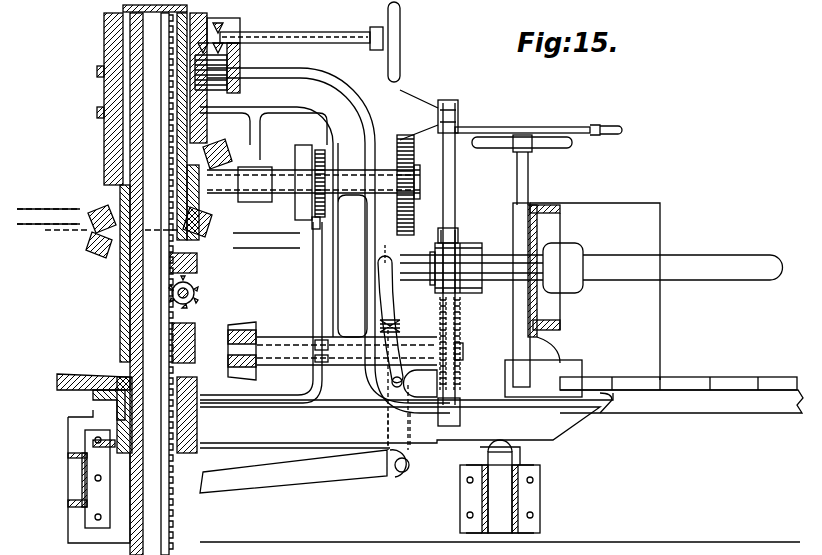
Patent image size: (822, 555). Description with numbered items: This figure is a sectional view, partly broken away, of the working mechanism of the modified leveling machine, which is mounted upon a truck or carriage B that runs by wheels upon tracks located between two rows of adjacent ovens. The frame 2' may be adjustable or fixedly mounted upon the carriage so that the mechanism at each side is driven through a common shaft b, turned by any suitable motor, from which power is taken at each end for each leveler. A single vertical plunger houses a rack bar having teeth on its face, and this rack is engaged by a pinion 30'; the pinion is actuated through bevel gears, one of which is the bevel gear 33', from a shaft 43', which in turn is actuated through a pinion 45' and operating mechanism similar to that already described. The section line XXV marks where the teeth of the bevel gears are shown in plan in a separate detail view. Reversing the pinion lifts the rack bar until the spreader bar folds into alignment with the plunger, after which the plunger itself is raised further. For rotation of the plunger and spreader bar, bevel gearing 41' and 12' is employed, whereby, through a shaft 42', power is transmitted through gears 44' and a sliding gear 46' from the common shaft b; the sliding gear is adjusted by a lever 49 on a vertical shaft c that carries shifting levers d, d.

The frame 2' is at (325, 240).
The pinion 45' is at (417, 185).
The vertical shaft c is at (456, 172).
The lever 49 is at (573, 127).
The sliding gear 46' is at (465, 223).
The shifting levers d is at (478, 303).
The shaft 43' is at (301, 189).
The section line XXV is at (158, 229).
The bevel gear 33' is at (77, 231).
The pinion 30' is at (206, 308).
The bevel gearing 41' is at (332, 350).
The bevel gearing 12' is at (79, 384).
The shaft 42' is at (475, 352).
The gears 44' is at (465, 361).
The common shaft b is at (722, 258).
The truck or carriage B is at (665, 471).